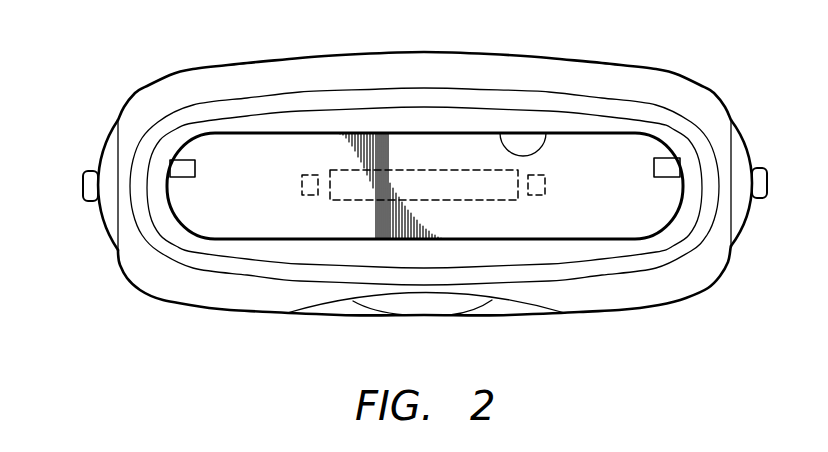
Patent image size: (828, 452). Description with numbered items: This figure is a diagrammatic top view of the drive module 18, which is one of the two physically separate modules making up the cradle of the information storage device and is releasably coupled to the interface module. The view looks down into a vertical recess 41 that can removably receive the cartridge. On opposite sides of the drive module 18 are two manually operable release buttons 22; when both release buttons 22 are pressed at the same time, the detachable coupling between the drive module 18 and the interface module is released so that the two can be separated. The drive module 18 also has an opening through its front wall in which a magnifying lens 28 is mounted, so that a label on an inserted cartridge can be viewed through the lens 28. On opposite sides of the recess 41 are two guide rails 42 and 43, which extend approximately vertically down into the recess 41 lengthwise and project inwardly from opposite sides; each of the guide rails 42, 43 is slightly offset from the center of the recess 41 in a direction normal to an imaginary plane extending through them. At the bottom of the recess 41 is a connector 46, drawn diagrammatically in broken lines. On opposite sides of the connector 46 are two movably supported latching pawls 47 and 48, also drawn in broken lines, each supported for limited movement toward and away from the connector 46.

The drive module 18 is at (612, 308).
The release button 22 is at (83, 182).
The magnifying lens 28 is at (425, 303).
The vertical recess 41 is at (547, 133).
The guide rail 42 is at (196, 168).
The guide rail 43 is at (653, 166).
The connector 46 is at (425, 170).
The latching pawl 47 is at (300, 191).
The latching pawl 48 is at (548, 187).